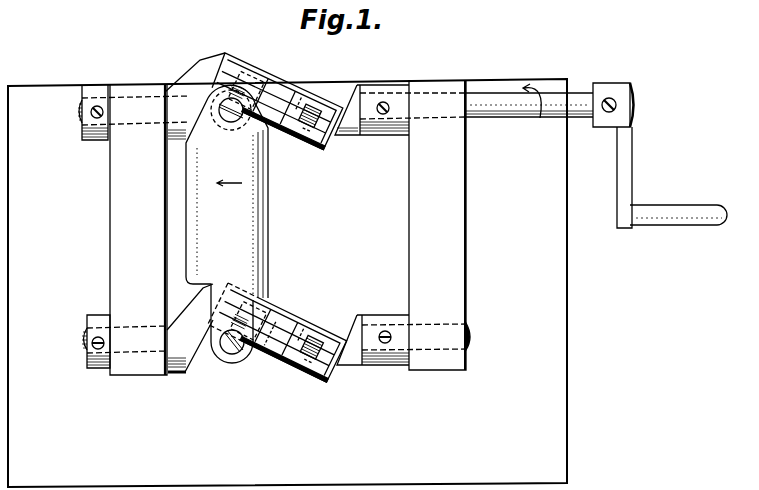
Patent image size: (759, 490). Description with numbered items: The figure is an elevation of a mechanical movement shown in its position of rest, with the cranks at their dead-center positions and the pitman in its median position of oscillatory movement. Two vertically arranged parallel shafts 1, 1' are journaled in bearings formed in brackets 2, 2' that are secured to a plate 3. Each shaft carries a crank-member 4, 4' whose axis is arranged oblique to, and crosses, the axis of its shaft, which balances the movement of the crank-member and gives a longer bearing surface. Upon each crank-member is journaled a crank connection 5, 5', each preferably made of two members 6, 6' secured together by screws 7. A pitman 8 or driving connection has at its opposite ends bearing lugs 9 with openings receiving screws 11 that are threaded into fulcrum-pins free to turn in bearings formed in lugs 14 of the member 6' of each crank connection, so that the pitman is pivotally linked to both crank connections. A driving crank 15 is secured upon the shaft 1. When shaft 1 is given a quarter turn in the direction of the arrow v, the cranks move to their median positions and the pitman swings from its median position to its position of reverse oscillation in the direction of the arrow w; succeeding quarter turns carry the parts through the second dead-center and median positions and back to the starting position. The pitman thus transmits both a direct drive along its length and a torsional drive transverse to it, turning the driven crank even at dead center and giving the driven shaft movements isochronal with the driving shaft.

The shaft 1 is at (337, 95).
The shaft 1' is at (290, 336).
The bracket 2 is at (132, 229).
The bracket 2' is at (400, 225).
The plate 3 is at (562, 358).
The crank-member 4 is at (260, 83).
The crank-member 4' is at (262, 310).
The crank connection 5 is at (311, 97).
The crank connection 5' is at (311, 327).
The member 6 is at (276, 209).
The member 6' is at (284, 247).
The screw 7 is at (295, 362).
The pitman 8 is at (255, 206).
The bearing lug 9 is at (216, 108).
The screw 11 is at (231, 119).
The lug 14 is at (240, 366).
The driving crank 15 is at (656, 213).
The arrow v is at (532, 112).
The arrow w is at (229, 191).